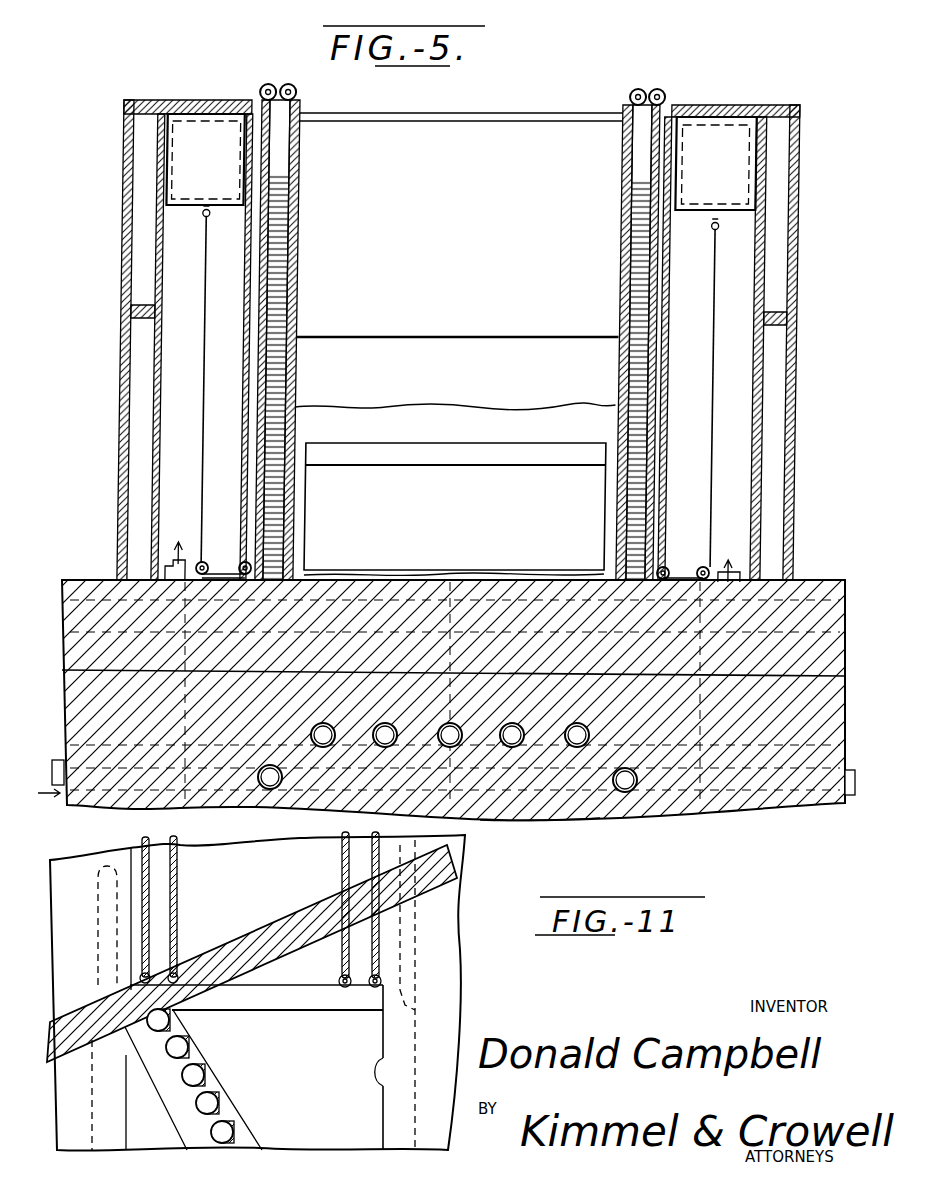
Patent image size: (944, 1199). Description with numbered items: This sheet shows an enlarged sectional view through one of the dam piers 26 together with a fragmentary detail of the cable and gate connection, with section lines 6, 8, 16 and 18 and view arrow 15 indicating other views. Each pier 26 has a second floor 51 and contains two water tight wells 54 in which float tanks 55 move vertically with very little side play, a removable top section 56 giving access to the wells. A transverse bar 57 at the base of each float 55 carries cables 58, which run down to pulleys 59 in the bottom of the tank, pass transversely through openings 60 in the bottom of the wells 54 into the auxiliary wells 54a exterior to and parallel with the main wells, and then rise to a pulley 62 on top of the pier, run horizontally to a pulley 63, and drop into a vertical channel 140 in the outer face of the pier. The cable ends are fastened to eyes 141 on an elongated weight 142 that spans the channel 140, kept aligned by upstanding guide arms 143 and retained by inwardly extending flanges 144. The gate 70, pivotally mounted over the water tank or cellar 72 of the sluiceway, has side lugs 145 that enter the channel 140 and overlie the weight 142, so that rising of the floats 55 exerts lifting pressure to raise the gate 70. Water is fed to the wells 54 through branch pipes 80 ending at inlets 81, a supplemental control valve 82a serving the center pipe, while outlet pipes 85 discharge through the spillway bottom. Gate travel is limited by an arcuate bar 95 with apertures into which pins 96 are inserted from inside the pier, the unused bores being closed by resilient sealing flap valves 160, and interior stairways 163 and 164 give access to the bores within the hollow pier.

In FIG. 5, the section line 6- 6 is at (250, 830).
In FIG. 5, the section line 8- 8 is at (118, 558).
In FIG. 11, the view arrow 15 is at (170, 917).
In FIG. 11, the section line 16- 16 is at (109, 967).
In FIG. 11, the section line 18- 18 is at (143, 1040).
In FIG. 5, the elongated pier 26 is at (458, 340).
In FIG. 11, the elongated pier 26 is at (455, 905).
In FIG. 5, the second floor 51 is at (459, 315).
In FIG. 5, the water tight well 54 is at (459, 347).
In FIG. 5, the auxiliary well 54a is at (456, 347).
In FIG. 5, the float tank 55 is at (461, 162).
In FIG. 5, the removable top section 56 is at (462, 108).
In FIG. 5, the transverse bar 57 is at (461, 218).
In FIG. 5, the cable 58 is at (458, 392).
In FIG. 11, the cable 58 is at (178, 872).
In FIG. 5, the pulley 59 is at (452, 570).
In FIG. 5, the opening 60 is at (452, 570).
In FIG. 5, the pulley 62 is at (462, 94).
In FIG. 5, the pulley 63 is at (463, 94).
In FIG. 5, the gate 70 is at (461, 117).
In FIG. 11, the gate 70 is at (268, 920).
In FIG. 5, the tank or cellar 72 is at (455, 509).
In FIG. 5, the branch pipe 80 is at (780, 852).
In FIG. 5, the inlet 81 is at (453, 562).
In FIG. 5, the supplemental control valve 82a is at (556, 822).
In FIG. 5, the outlet pipe 85 is at (510, 728).
In FIG. 11, the arcuate bar 95 is at (223, 1110).
In FIG. 11, the pin 96 is at (76, 1095).
In FIG. 11, the vertical recess or channel 140 is at (272, 862).
In FIG. 11, the eye 141 is at (336, 976).
In FIG. 11, the elongated weight 142 is at (300, 1012).
In FIG. 11, the upstanding guide arm 143 is at (420, 937).
In FIG. 11, the flange 144 is at (383, 1085).
In FIG. 11, the transversely extending lug 145 is at (168, 925).
In FIG. 11, the resilient sealing flap valve 160 is at (170, 1022).
In FIG. 5, the stairway 163 is at (457, 340).
In FIG. 5, the stairway 164 is at (455, 406).